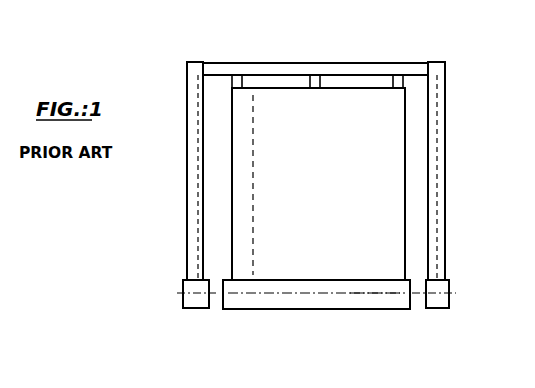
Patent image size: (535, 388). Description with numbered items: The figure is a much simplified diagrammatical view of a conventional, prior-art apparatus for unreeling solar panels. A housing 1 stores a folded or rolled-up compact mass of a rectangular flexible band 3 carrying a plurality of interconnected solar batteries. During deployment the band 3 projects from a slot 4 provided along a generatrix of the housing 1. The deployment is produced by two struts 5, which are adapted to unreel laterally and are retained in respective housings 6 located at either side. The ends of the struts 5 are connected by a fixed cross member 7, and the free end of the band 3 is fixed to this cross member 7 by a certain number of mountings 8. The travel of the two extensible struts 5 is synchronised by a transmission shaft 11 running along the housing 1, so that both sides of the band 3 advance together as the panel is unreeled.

The housing 1 is at (286, 300).
The band 3 is at (318, 184).
The slot 4 is at (364, 283).
The struts 5 is at (197, 218).
The housings 6 is at (193, 303).
The fixed cross member 7 is at (341, 70).
The mountings 8 is at (398, 75).
The transmission shaft 11 is at (386, 296).